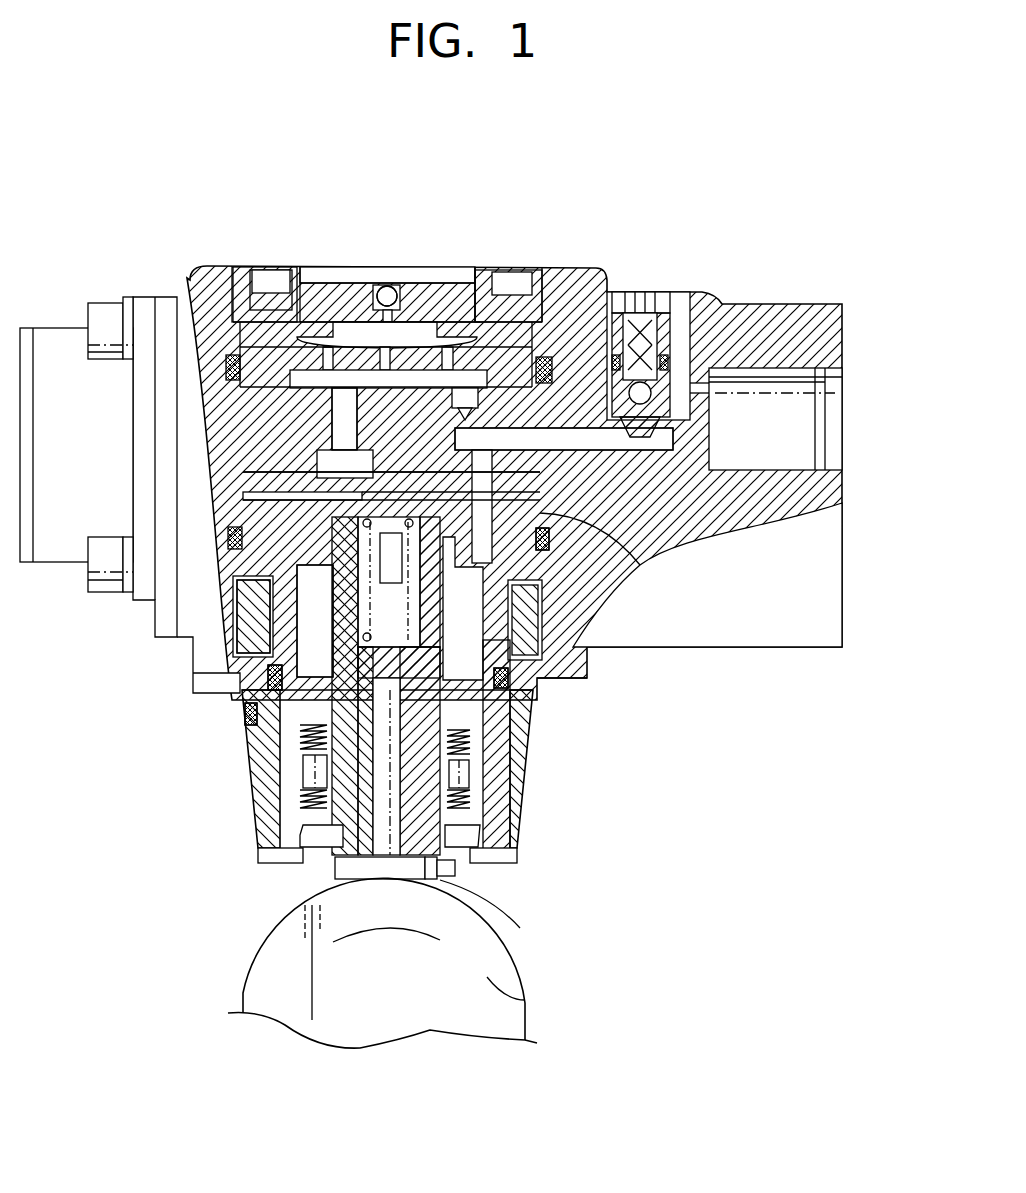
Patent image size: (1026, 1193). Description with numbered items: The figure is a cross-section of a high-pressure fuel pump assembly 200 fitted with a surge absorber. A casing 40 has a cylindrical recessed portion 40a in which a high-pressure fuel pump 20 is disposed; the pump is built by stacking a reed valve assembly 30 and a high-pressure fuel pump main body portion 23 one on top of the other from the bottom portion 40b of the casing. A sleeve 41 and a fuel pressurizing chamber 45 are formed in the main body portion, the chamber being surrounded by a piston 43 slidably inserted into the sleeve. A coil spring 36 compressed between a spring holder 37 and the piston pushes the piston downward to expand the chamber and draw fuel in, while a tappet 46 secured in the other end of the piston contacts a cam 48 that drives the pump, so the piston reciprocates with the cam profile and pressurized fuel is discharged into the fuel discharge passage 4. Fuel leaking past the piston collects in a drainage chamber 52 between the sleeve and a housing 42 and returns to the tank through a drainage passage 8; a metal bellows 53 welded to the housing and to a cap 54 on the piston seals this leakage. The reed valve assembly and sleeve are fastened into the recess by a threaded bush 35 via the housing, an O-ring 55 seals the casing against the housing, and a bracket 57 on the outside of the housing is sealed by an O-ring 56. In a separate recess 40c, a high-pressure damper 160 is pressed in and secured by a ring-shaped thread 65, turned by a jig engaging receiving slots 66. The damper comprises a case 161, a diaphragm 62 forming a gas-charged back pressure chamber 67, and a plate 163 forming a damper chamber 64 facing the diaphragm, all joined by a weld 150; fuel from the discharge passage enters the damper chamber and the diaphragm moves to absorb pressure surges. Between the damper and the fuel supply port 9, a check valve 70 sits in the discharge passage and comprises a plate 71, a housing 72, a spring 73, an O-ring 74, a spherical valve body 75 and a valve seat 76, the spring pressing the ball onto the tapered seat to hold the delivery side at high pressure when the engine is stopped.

The high-pressure fuel pump assembly 200 is at (210, 263).
The weld 150 is at (233, 267).
The ring-shaped thread 65 is at (233, 267).
The recess 40c is at (270, 267).
The case 161 is at (330, 290).
The diaphragm 62 is at (362, 290).
The damper chamber 64 is at (437, 285).
The high-pressure damper 160 is at (480, 264).
The receiving slots 66 is at (513, 268).
The plate 163 is at (520, 278).
The back pressure chamber 67 is at (472, 282).
The plate 71 is at (623, 290).
The housing 72 is at (637, 292).
The spring 73 is at (662, 290).
The O-ring 74 is at (688, 286).
The valve body 75 is at (688, 330).
The check valve 70 is at (724, 308).
The valve seat 76 is at (790, 282).
The fuel supply port 9 is at (797, 387).
The casing 40 is at (549, 464).
The fuel discharge passage 4 is at (337, 415).
The spring holder 37 is at (180, 492).
The reed valve assembly 30 is at (215, 520).
The O-ring 55 is at (235, 575).
The high-pressure fuel pump main body portion 23 is at (250, 540).
The threaded bush 35 is at (222, 650).
The sleeve 41 is at (250, 640).
The piston 43 is at (243, 705).
The O-ring 56 is at (245, 750).
The fuel pressurizing chamber 45 is at (255, 823).
The bracket 57 is at (262, 852).
The drainage passage 8 is at (473, 677).
The cylindrical recessed portion 40a is at (548, 560).
The bottom portion 40b is at (640, 567).
The drainage chamber 52 is at (520, 700).
The housing 42 is at (510, 747).
The spring 36 is at (447, 750).
The metal bellows 53 is at (450, 837).
The cap 54 is at (435, 875).
The high-pressure fuel pump 20 is at (392, 738).
The tappet 46 is at (497, 920).
The cam 48 is at (525, 1000).